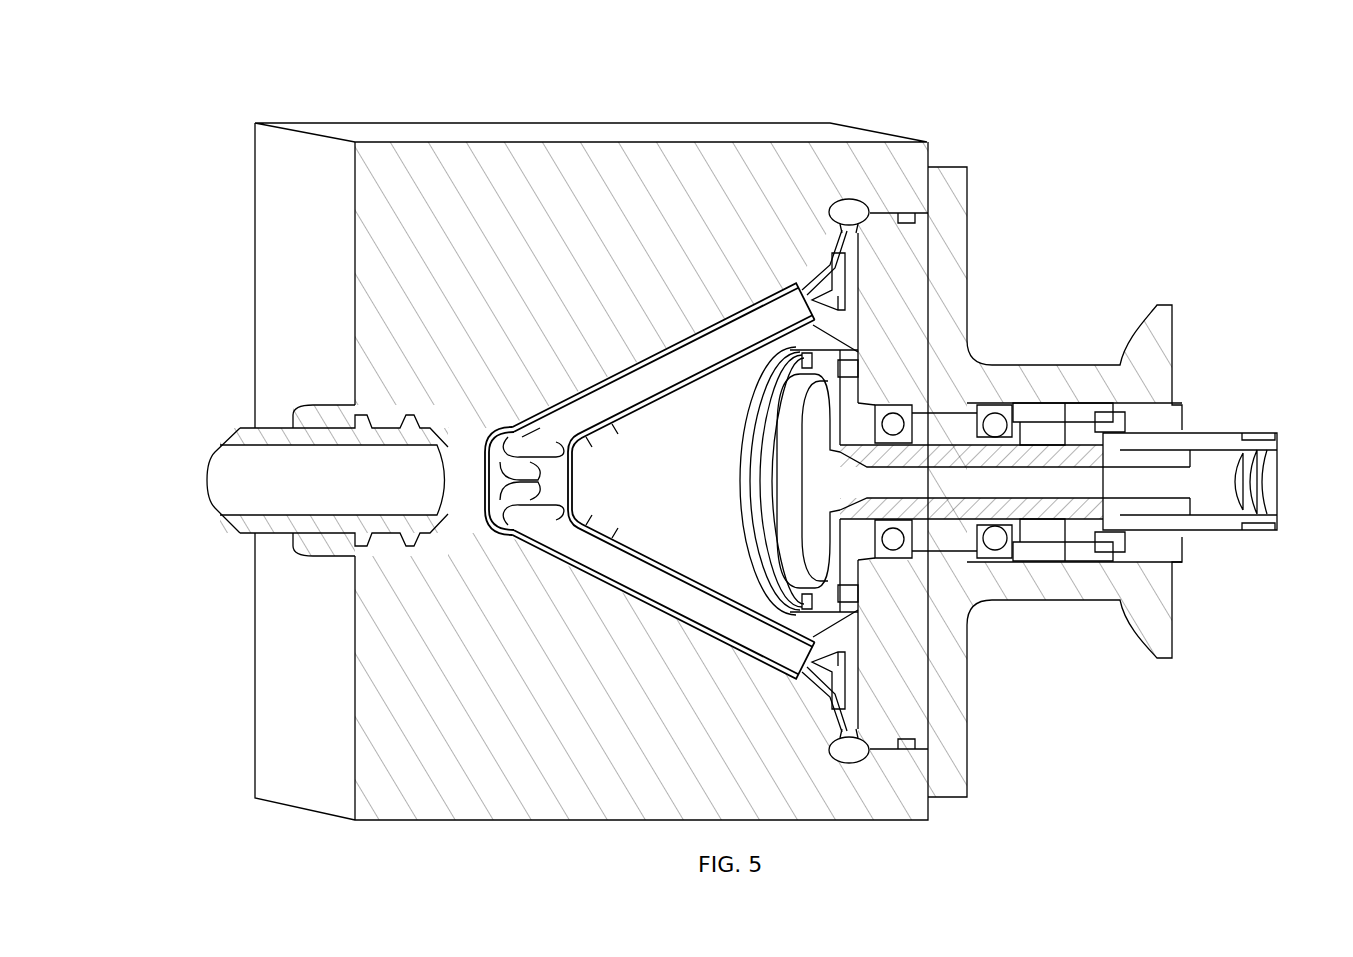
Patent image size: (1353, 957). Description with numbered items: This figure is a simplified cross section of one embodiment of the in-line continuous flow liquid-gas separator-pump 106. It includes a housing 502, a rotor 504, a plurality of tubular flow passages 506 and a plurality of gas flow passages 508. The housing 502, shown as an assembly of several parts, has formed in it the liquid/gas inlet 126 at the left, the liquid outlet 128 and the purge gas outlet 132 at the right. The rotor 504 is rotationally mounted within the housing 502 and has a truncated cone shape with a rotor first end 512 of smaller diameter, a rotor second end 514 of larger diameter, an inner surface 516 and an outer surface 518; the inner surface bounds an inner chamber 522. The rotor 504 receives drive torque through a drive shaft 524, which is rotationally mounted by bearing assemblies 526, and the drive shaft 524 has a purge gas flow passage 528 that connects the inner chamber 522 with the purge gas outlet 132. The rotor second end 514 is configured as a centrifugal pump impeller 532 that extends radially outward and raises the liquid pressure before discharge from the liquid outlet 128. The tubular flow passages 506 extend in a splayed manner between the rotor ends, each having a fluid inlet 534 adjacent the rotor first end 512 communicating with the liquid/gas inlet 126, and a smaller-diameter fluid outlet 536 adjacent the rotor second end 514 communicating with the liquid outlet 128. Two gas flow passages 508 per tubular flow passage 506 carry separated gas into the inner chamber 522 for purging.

The in-line continuous flow liquid-gas separator-pump 106 is at (411, 109).
The housing 502 is at (843, 119).
The liquid outlet 128 is at (852, 200).
The liquid/gas inlet 126 is at (210, 492).
The rotor first end 512 is at (472, 525).
The fluid inlet 534 is at (510, 430).
The rotor 504 is at (678, 337).
The tubular flow passages 506 is at (738, 342).
The gas flow passages 508 is at (622, 415).
The outer surface 518 is at (538, 430).
The fluid outlet 536 is at (803, 293).
The centrifugal pump impeller 532 is at (855, 252).
The rotor second end 514 is at (853, 323).
The inner chamber 522 is at (662, 492).
The inner surface 516 is at (685, 398).
The bearing assemblies 526 is at (893, 405).
The drive shaft 524 is at (1048, 455).
The purge gas flow passage 528 is at (1107, 477).
The purge gas outlet 132 is at (1263, 483).